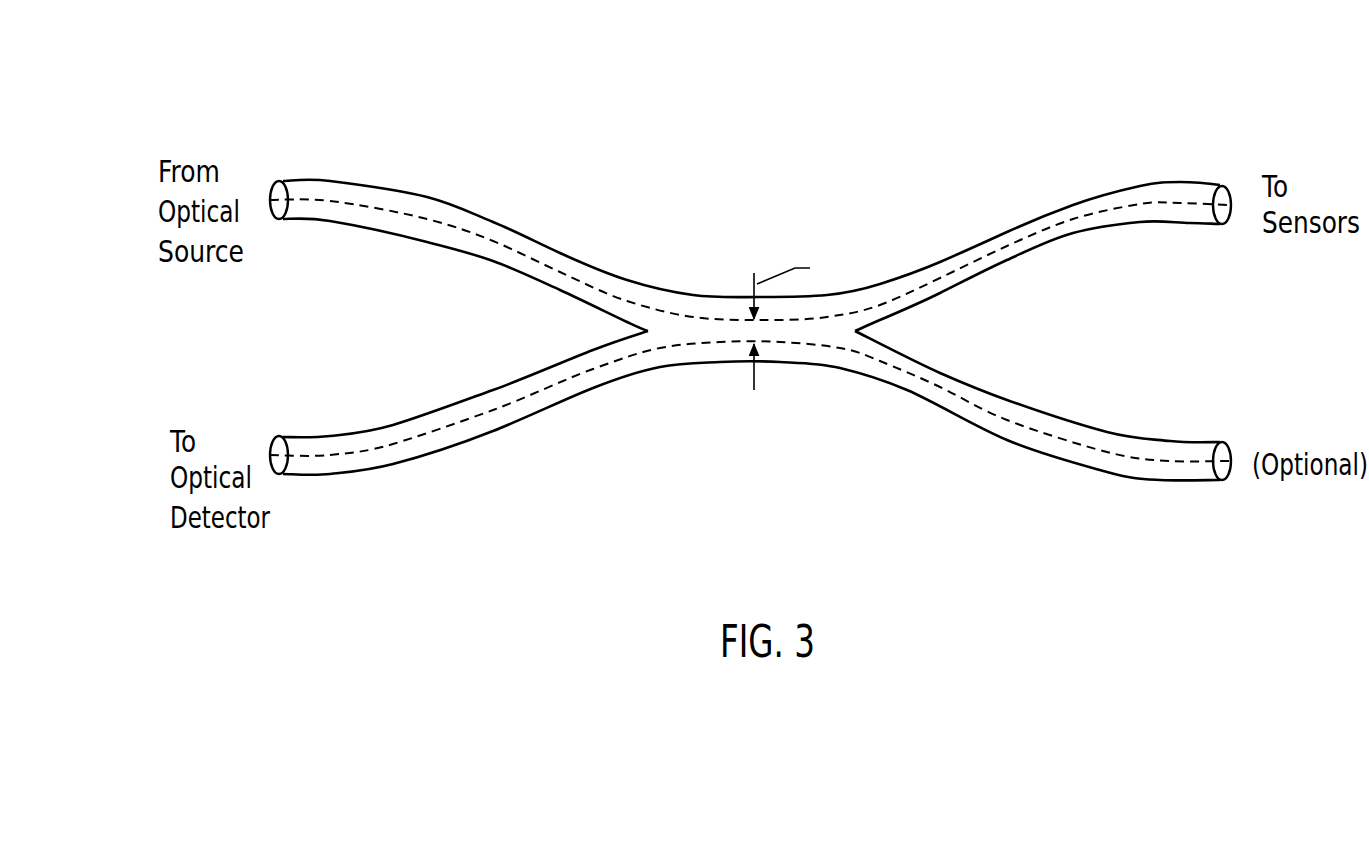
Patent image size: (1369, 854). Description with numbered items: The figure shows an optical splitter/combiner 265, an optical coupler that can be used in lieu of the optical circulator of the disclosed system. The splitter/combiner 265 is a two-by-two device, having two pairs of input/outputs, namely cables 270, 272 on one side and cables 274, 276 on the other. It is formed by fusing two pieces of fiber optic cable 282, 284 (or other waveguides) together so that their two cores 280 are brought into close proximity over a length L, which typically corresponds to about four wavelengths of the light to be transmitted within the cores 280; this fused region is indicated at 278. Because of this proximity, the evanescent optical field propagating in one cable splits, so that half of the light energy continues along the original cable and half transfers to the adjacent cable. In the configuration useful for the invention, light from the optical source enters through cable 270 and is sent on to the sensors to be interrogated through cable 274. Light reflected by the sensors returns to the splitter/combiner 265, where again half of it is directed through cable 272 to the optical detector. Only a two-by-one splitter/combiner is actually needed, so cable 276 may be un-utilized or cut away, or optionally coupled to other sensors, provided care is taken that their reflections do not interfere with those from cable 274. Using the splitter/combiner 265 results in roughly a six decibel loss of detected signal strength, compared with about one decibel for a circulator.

The splitter/combiner 265 is at (731, 305).
The cable 270 is at (462, 214).
The cable 272 is at (495, 454).
The cable 274 is at (1029, 226).
The cable 276 is at (1005, 452).
The fused coupling region 278 is at (724, 370).
The cores 280 is at (750, 330).
The fiber optic cable 282 is at (731, 214).
The fiber optic cable 284 is at (750, 454).